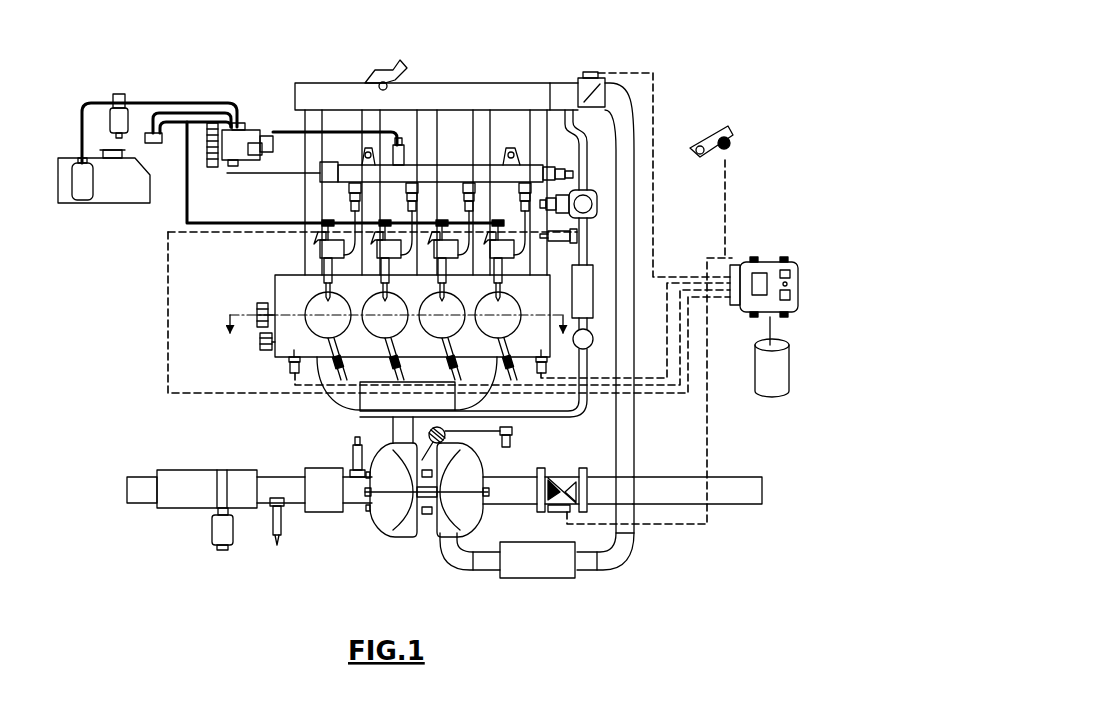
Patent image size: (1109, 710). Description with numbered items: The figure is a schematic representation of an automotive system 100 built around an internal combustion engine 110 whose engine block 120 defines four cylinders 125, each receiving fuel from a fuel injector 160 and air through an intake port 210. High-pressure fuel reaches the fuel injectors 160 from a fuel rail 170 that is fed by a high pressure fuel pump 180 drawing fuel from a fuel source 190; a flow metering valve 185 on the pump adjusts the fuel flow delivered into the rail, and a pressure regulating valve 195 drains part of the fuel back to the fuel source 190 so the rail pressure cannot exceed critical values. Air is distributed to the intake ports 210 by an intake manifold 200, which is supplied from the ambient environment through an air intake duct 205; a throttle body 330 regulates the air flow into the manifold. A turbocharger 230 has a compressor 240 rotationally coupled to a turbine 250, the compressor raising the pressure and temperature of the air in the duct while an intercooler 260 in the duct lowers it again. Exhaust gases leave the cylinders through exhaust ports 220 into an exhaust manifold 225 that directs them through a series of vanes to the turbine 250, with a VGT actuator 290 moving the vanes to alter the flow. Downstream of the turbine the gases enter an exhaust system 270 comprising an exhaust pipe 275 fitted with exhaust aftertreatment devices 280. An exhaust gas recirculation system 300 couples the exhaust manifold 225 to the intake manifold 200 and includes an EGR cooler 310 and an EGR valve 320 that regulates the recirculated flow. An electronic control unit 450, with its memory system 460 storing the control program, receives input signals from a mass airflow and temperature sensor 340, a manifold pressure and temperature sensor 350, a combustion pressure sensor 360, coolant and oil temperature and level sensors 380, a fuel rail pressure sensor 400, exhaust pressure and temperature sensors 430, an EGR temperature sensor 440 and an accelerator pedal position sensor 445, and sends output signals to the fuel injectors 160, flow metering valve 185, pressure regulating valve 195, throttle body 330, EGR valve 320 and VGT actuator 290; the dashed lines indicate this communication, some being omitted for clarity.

The automotive system 100 is at (220, 70).
The internal combustion engine 110 is at (505, 77).
The engine block 120 is at (275, 282).
The cylinder 125 is at (512, 300).
The fuel injector 160 is at (323, 258).
The fuel rail 170 is at (462, 170).
The high pressure fuel pump 180 is at (210, 163).
The flow metering valve 185 is at (248, 123).
The fuel source 190 is at (122, 192).
The pressure regulating valve 195 is at (330, 170).
The intake manifold 200 is at (430, 95).
The air intake duct 205 is at (627, 453).
The intake port 210 is at (313, 275).
The exhaust port 220 is at (325, 358).
The exhaust manifold 225 is at (383, 403).
The turbocharger 230 is at (400, 547).
The compressor 240 is at (450, 517).
The turbine 250 is at (403, 510).
The intercooler 260 is at (558, 565).
The exhaust system 270 is at (193, 460).
The exhaust pipe 275 is at (140, 490).
The exhaust aftertreatment device 280 is at (178, 492).
The VGT actuator 290 is at (440, 437).
The exhaust gas recirculation system 300 is at (556, 422).
The EGR cooler 310 is at (584, 300).
The EGR valve 320 is at (593, 187).
The throttle body 330 is at (590, 73).
The mass airflow and temperature sensor 340 is at (560, 508).
The manifold pressure and temperature sensor 350 is at (380, 70).
The combustion pressure sensor 360 is at (338, 367).
The coolant and oil temperature and level sensors 380 is at (288, 358).
The fuel rail pressure sensor 400 is at (570, 170).
The exhaust pressure and temperature sensors 430 is at (278, 537).
The EGR temperature sensor 440 is at (583, 227).
The accelerator pedal position sensor 445 is at (727, 132).
The electronic control unit 450 is at (766, 257).
The memory system 460 is at (772, 380).